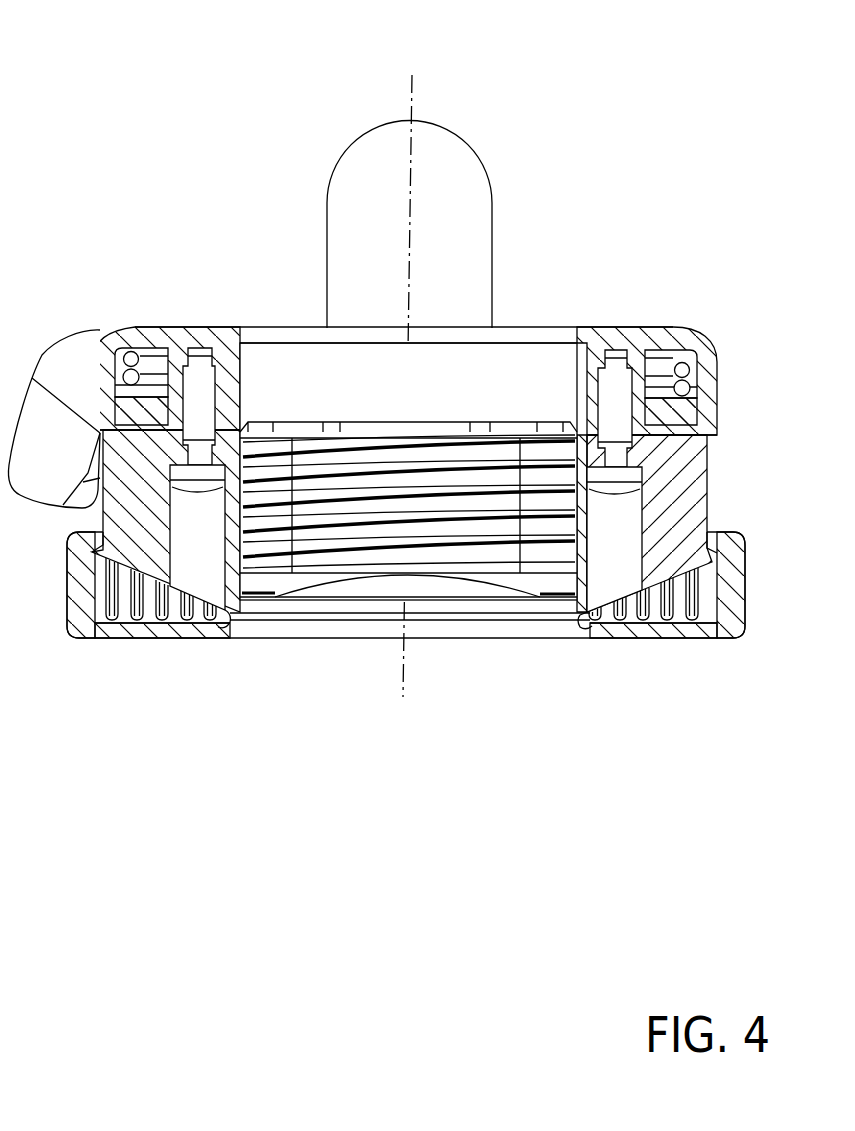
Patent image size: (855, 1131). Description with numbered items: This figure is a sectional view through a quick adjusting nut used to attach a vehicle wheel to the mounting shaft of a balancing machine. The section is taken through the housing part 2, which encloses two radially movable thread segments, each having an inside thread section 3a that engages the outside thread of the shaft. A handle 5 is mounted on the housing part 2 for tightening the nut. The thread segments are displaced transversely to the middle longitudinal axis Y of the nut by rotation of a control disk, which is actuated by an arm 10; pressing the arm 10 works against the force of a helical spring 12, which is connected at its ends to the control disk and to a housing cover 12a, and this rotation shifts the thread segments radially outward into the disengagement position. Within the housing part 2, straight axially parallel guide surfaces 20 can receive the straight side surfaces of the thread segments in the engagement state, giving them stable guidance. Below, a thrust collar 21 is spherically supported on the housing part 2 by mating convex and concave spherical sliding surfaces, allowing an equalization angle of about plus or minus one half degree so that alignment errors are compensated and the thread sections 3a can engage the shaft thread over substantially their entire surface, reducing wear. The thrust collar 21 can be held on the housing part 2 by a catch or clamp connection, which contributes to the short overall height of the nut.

The housing part 2 is at (697, 490).
The inside thread section 3a is at (277, 582).
The handle 5 is at (480, 215).
The arm 10 is at (60, 362).
The helical spring 12 is at (680, 362).
The housing cover 12a is at (181, 340).
The axially parallel guide surface 20 is at (262, 612).
The thrust collar 21 is at (60, 632).
The middle longitudinal axis Y is at (412, 90).